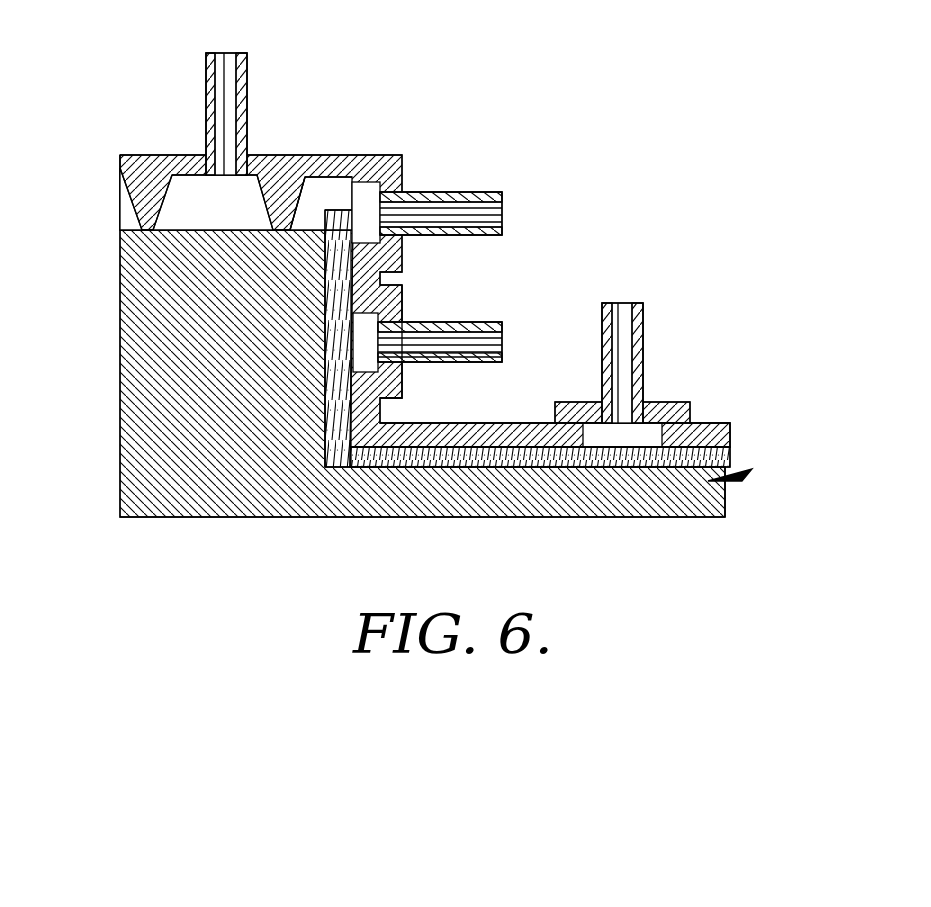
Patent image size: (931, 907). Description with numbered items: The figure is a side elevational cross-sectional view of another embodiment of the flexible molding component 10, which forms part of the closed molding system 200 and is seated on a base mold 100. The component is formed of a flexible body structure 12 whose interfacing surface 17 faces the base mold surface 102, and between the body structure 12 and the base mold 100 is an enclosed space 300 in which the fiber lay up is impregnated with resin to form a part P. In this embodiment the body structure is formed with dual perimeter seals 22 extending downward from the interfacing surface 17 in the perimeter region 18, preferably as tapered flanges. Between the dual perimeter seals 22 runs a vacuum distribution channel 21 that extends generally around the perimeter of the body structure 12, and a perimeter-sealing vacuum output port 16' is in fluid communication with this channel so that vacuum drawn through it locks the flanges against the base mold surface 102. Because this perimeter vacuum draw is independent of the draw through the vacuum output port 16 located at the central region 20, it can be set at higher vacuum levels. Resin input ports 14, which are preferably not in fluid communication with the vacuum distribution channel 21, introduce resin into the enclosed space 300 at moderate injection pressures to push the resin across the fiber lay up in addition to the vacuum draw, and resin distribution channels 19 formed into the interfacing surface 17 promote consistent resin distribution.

The molding component 10 is at (327, 127).
The flexible body structure 12 is at (403, 422).
The resin input port 14 is at (469, 184).
The vacuum output port 16 is at (644, 363).
The perimeter-sealing vacuum output port 16' is at (208, 95).
The interfacing surface 17 is at (365, 181).
The perimeter region 18 is at (98, 150).
The resin distribution channel 19 is at (321, 203).
The central region 20 is at (558, 300).
The vacuum distribution channel 21 is at (657, 435).
The perimeter seal 22 is at (121, 190).
The base mold 100 is at (415, 518).
The base mold surface 102 is at (303, 176).
The system 200 is at (759, 332).
The enclosed space 300 is at (760, 487).
The part P is at (735, 460).